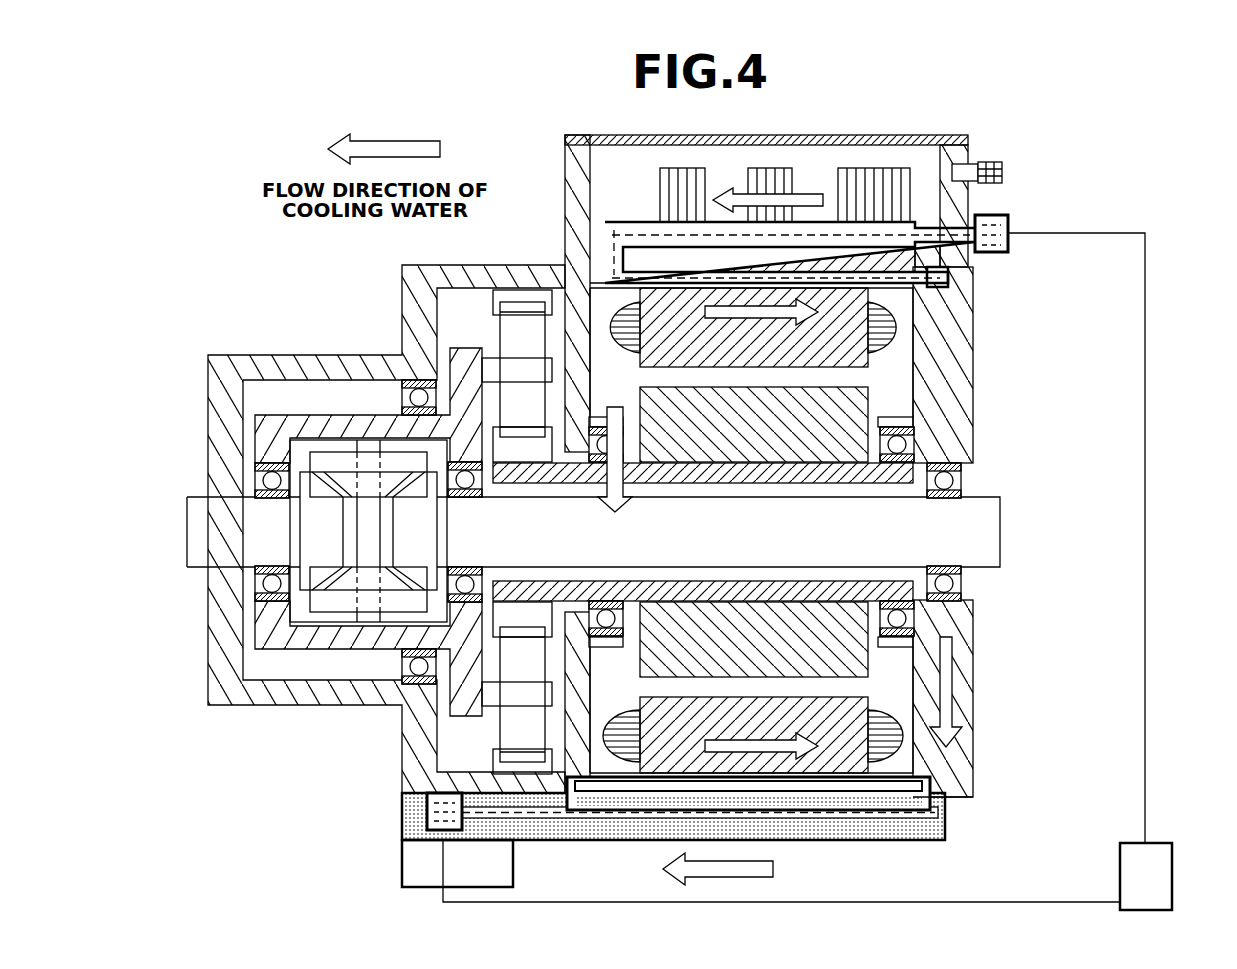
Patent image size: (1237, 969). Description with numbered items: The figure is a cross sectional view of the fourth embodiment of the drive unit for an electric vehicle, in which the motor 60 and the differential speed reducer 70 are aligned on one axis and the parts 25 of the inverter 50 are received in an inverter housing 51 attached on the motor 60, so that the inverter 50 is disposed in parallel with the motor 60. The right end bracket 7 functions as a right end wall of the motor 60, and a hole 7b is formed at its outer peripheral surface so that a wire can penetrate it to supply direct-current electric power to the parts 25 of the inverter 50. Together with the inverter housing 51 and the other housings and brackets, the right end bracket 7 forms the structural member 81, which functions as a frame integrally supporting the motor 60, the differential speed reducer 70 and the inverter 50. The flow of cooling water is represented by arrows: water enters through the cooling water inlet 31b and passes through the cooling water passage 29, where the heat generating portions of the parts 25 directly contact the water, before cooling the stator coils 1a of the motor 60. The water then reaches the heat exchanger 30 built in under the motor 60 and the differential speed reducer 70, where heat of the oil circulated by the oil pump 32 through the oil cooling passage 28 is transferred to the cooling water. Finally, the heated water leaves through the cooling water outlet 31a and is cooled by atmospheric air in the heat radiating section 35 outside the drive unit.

The stator coils 1a is at (900, 320).
The right end bracket 7 is at (968, 433).
The hole 7b is at (1003, 172).
The parts of inverter 25 is at (870, 168).
The oil cooling passage 28 is at (903, 827).
The cooling water passage 29 is at (618, 228).
The heat exchanger 30 is at (540, 840).
The cooling water outlet 31a is at (425, 812).
The cooling water inlet 31b is at (1010, 245).
The oil pump 32 is at (410, 872).
The heat radiating section 35 is at (1158, 843).
The inverter 50 is at (617, 156).
The inverter housing 51 is at (566, 232).
The motor 60 is at (806, 466).
The differential speed reducer 70 is at (372, 352).
The structural member 81 is at (980, 800).